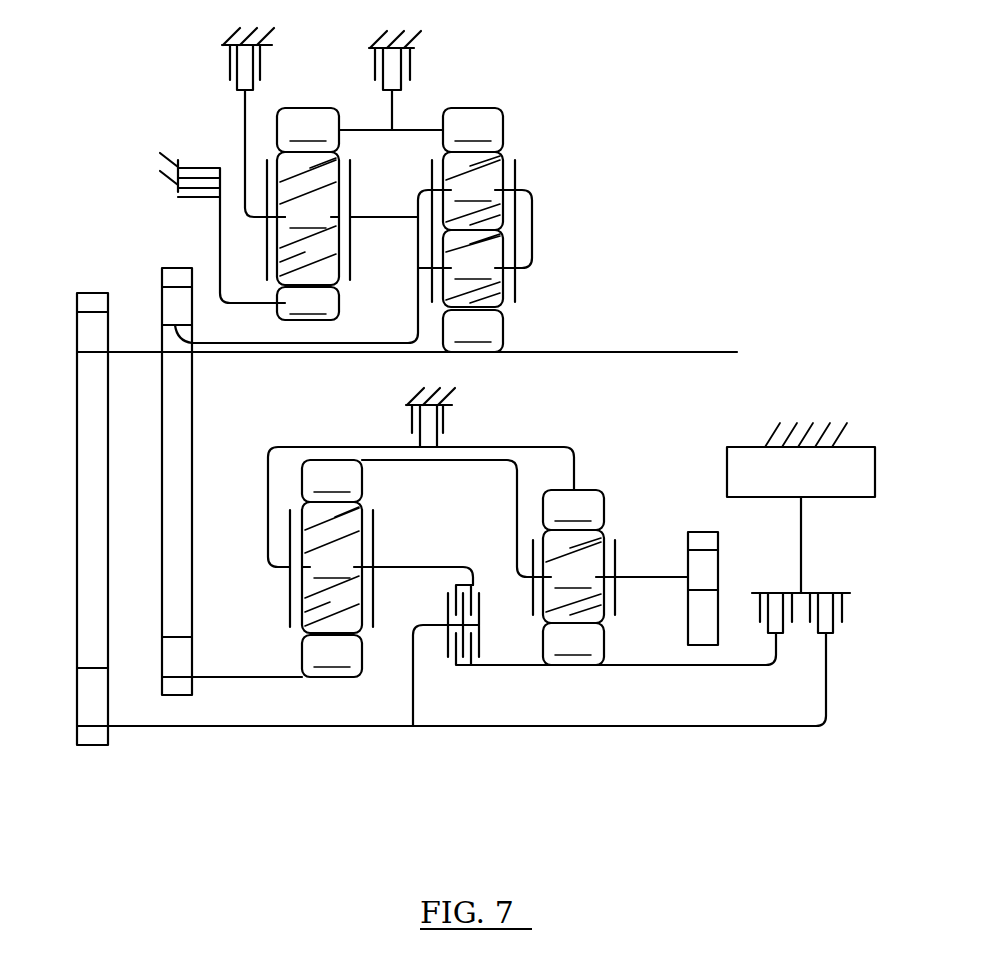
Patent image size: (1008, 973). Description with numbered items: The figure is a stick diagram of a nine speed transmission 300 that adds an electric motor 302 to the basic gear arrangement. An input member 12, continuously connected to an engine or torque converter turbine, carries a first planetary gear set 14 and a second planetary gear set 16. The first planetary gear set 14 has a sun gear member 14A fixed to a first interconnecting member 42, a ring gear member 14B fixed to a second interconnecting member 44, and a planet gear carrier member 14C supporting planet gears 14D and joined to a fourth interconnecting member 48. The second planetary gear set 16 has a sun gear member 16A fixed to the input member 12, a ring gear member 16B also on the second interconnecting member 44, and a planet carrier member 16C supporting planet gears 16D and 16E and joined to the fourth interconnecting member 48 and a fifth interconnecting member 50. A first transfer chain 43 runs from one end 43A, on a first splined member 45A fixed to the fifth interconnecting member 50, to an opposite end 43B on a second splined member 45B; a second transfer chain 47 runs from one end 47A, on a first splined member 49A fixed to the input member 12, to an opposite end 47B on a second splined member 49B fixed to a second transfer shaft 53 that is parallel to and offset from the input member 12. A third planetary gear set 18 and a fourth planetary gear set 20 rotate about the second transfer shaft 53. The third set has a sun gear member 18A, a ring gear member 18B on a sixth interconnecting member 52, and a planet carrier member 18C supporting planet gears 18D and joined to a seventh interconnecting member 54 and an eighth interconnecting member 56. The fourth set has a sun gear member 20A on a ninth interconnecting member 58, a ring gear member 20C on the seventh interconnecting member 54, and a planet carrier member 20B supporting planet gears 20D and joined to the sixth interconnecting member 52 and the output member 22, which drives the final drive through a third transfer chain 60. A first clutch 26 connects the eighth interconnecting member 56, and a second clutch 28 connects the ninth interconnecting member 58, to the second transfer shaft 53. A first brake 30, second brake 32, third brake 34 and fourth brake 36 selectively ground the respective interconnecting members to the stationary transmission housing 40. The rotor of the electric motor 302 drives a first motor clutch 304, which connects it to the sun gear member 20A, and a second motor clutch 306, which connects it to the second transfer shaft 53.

The input member 12 is at (703, 356).
The first planetary gear set 14 is at (340, 165).
The sun gear member 14A is at (308, 303).
The ring gear member 14B is at (308, 130).
The planet gear carrier member 14C is at (352, 190).
The planet gears 14D is at (308, 218).
The second planetary gear set 16 is at (509, 206).
The sun gear member 16A is at (473, 331).
The ring gear member 16B is at (473, 130).
The planet carrier member 16C is at (518, 172).
The planet gears 16D is at (473, 191).
The planet gears 16E is at (473, 268).
The third planetary gear set 18 is at (334, 539).
The sun gear member 18A is at (332, 656).
The ring gear member 18B is at (332, 481).
The planet carrier member 18C is at (376, 520).
The planet gears 18D is at (332, 567).
The fourth planetary gear set 20 is at (545, 550).
The sun gear member 20A is at (573, 644).
The planet carrier member 20B is at (530, 558).
The ring gear member 20C is at (573, 510).
The planet gears 20D is at (573, 576).
The output member 22 is at (645, 576).
The first clutch 26 is at (481, 616).
The second clutch 28 is at (447, 640).
The first brake 30 is at (200, 168).
The second brake 32 is at (408, 62).
The third brake 34 is at (232, 68).
The fourth brake 36 is at (446, 424).
The stationary member or transmission housing 40 is at (225, 38).
The first interconnecting member 42 is at (222, 257).
The first transfer chain 43 is at (161, 490).
The end of first transfer chain 43A is at (182, 275).
The end of first transfer chain 43B is at (178, 690).
The second interconnecting member 44 is at (421, 128).
The first splined member 45A is at (175, 312).
The second splined member 45B is at (170, 650).
The second transfer chain 47 is at (109, 572).
The end of second transfer chain 47A is at (90, 300).
The end of second transfer chain 47B is at (98, 735).
The fourth interconnecting member 48 is at (398, 222).
The first splined member 49A is at (90, 335).
The second splined member 49B is at (85, 708).
The fifth interconnecting member 50 is at (373, 341).
The sixth interconnecting member 52 is at (476, 463).
The second transfer shaft or interconnecting member 53 is at (623, 725).
The seventh interconnecting member 54 is at (531, 446).
The eighth interconnecting member 56 is at (411, 566).
The ninth interconnecting member 58 is at (497, 668).
The third transfer chain 60 is at (688, 620).
The nine speed transmission 300 is at (686, 160).
The electric motor 302 is at (836, 498).
The first motor clutch 304 is at (760, 617).
The second motor clutch 306 is at (845, 612).